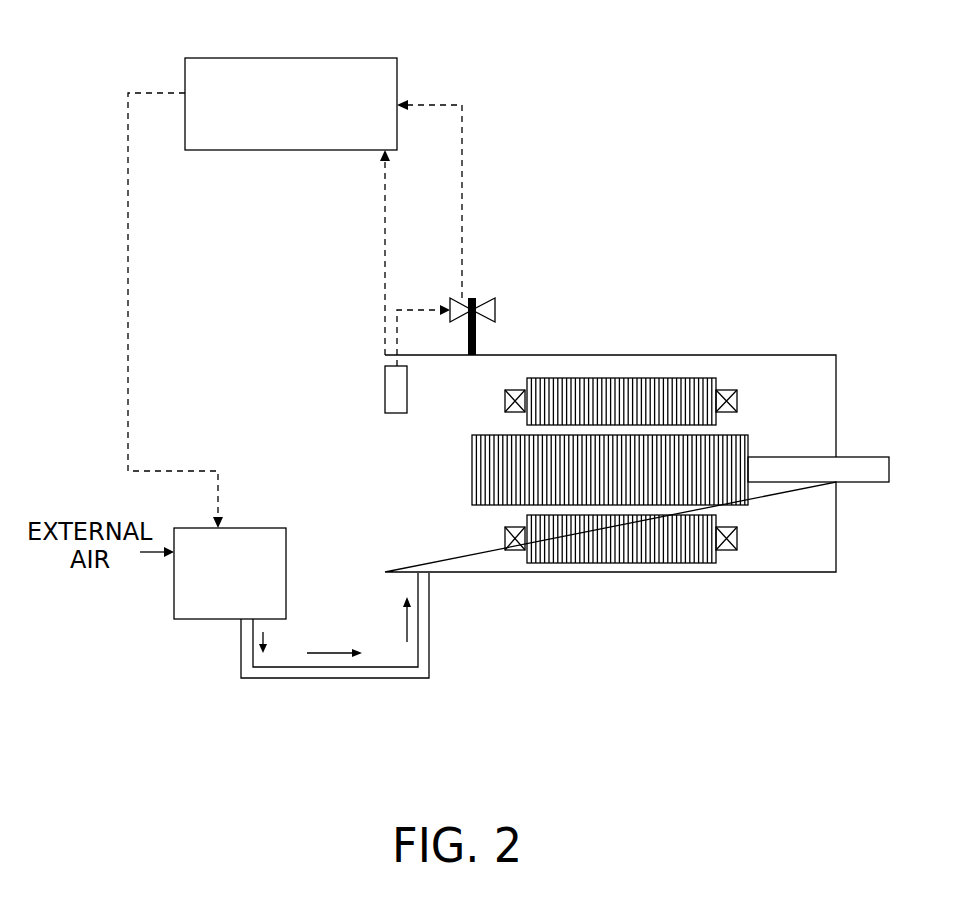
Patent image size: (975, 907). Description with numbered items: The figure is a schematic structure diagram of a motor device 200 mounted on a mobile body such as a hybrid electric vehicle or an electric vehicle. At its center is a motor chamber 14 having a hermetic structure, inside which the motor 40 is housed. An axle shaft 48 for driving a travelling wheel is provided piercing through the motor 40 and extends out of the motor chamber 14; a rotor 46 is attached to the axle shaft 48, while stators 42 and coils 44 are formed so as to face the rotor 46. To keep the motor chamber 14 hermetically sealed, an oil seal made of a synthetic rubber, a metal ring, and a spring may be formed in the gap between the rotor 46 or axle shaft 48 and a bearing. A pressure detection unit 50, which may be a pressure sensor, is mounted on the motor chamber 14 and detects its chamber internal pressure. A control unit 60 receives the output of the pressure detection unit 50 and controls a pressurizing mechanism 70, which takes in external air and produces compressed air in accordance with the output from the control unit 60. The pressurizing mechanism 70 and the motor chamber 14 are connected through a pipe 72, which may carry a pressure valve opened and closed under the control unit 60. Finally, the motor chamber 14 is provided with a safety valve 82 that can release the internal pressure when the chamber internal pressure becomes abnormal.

The motor device 200 is at (668, 106).
The control unit 60 is at (283, 58).
The safety valve 82 is at (480, 300).
The motor chamber 14 is at (583, 355).
The pressure detection unit 50 is at (385, 380).
The motor 40 is at (613, 472).
The stators 42 is at (672, 355).
The coils 44 is at (505, 402).
The rotor 46 is at (472, 458).
The axle shaft 48 is at (868, 482).
The pressurizing mechanism 70 is at (207, 619).
The pipe 72 is at (430, 620).